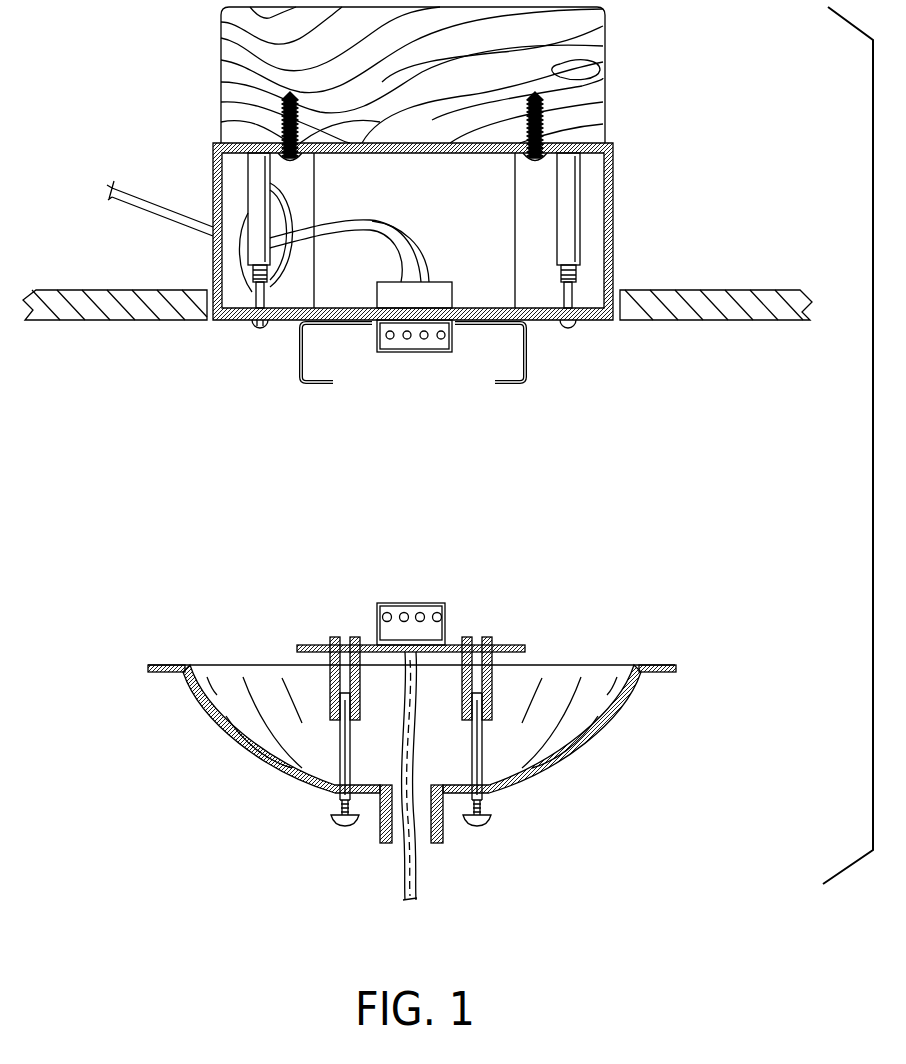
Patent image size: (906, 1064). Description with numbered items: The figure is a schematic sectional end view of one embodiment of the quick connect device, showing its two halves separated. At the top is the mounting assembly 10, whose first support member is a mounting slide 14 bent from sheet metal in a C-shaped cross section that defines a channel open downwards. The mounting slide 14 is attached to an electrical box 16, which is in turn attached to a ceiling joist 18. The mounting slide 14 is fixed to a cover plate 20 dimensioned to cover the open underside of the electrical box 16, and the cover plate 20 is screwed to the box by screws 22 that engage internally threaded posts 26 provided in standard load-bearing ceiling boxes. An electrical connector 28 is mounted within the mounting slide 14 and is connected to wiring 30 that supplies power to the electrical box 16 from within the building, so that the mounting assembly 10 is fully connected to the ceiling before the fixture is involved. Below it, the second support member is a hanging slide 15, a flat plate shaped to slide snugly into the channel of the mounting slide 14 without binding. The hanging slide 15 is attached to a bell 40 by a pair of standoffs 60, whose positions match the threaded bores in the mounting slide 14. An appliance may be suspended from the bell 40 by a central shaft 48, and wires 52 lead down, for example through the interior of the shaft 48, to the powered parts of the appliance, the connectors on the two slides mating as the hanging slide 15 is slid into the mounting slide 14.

The mounting assembly 10 is at (292, 426).
The mounting slide 14 is at (528, 380).
The hanging slide 15 is at (510, 650).
The electrical box 16 is at (613, 214).
The ceiling joist 18 is at (420, 56).
The cover plate 20 is at (232, 322).
The screws 22 is at (570, 325).
The internally threaded posts 26 is at (262, 250).
The electrical connector 28 is at (412, 353).
The wiring 30 is at (150, 199).
The bell 40 is at (578, 745).
The central shaft 48 is at (404, 840).
The wires 52 is at (418, 868).
The standoffs 60 is at (325, 798).